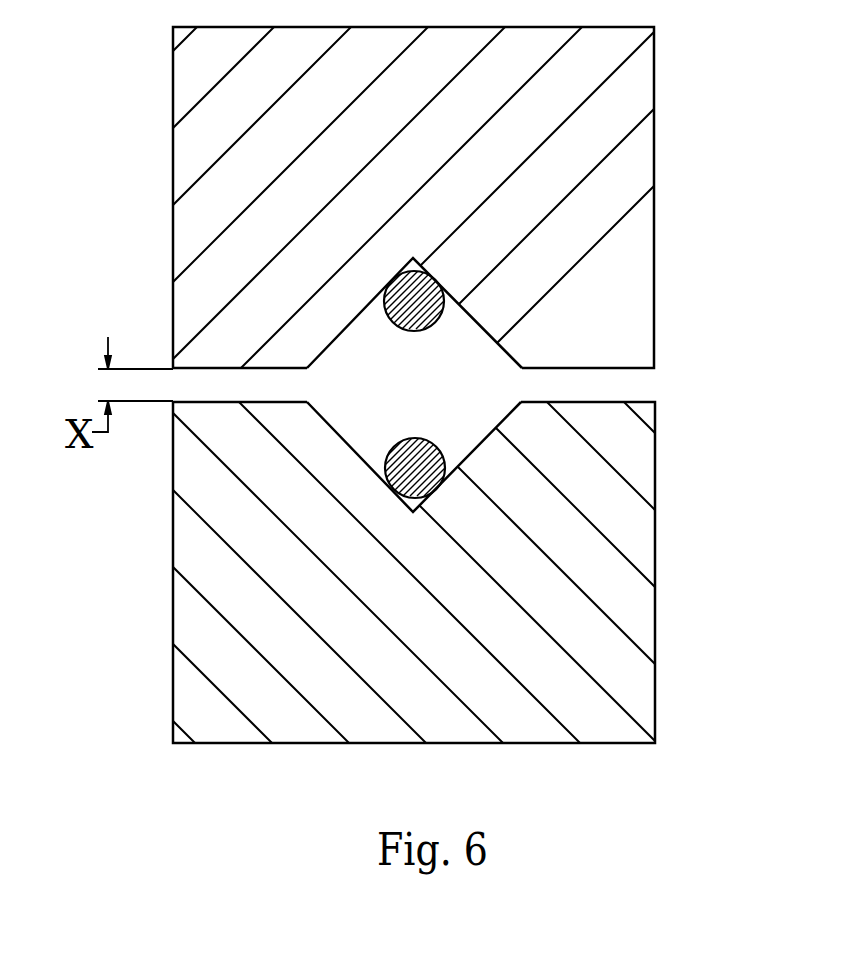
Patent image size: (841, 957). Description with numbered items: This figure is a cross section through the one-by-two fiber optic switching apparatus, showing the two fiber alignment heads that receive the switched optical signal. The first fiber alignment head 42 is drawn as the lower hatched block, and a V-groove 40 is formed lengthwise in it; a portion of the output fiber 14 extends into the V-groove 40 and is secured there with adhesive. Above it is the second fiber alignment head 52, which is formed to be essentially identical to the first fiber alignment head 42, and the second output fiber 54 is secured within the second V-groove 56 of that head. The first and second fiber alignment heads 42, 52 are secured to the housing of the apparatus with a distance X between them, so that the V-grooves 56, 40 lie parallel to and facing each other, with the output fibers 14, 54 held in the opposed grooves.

The output fiber 14 is at (385, 468).
The V-groove 40 is at (497, 430).
The fiber alignment head 42 is at (655, 540).
The second fiber alignment head 52 is at (654, 82).
The second output fiber 54 is at (457, 302).
The second V-groove 56 is at (497, 339).